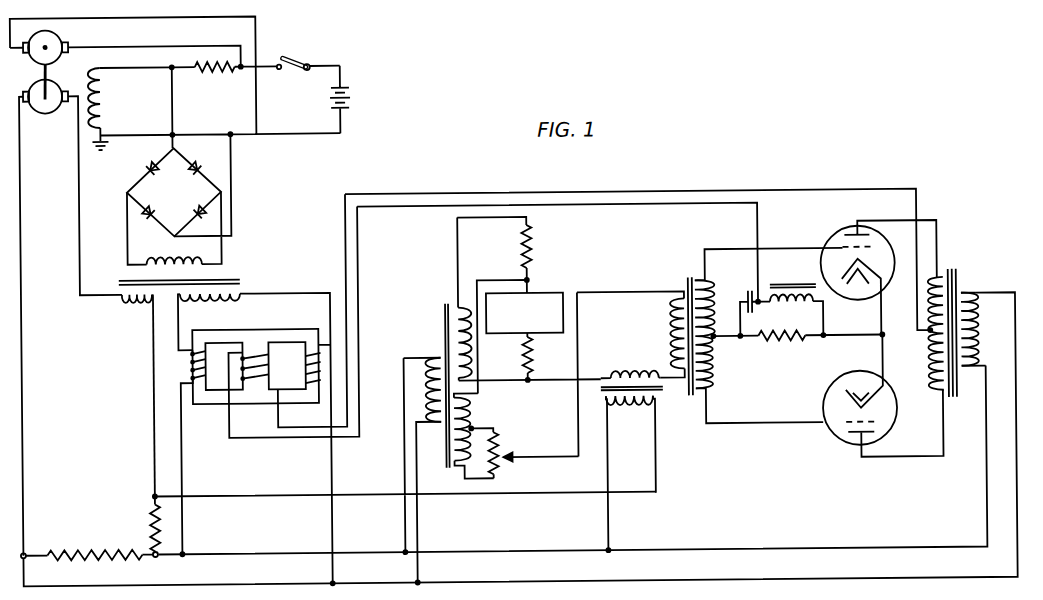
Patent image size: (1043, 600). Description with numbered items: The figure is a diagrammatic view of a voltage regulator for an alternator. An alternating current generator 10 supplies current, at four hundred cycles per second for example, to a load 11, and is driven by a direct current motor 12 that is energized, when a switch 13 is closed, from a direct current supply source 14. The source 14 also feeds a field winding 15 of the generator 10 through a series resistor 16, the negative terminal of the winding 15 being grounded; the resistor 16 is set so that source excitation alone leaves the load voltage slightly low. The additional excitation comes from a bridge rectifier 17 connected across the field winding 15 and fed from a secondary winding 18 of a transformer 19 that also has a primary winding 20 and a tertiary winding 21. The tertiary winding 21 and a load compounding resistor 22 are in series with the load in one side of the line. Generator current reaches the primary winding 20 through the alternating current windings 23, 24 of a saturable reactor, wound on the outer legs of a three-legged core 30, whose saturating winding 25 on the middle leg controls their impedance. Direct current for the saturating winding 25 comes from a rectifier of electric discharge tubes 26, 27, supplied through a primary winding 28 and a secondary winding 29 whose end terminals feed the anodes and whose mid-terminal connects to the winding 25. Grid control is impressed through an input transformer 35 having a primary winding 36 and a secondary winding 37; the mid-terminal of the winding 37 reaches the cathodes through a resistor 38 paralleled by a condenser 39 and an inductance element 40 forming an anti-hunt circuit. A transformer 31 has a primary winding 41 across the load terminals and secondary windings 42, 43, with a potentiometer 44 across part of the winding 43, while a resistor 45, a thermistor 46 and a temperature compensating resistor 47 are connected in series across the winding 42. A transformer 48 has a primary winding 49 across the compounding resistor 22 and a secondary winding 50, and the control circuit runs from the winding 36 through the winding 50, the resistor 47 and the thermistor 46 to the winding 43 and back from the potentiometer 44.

The alternating current generator 10 is at (42, 109).
The load 11 is at (84, 546).
The direct current motor 12 is at (55, 46).
The switch 13 is at (304, 56).
The direct current supply source 14 is at (348, 105).
The field winding 15 is at (106, 107).
The series resistor 16 is at (214, 72).
The bridge rectifier 17 is at (174, 192).
The secondary winding 18 is at (166, 258).
The transformer 19 is at (242, 281).
The primary winding 20 is at (231, 298).
The tertiary winding 21 is at (134, 300).
The load compounding resistor 22 is at (148, 512).
The alternating current winding 23 is at (191, 370).
The alternating current winding 24 is at (322, 372).
The saturating winding 25 is at (256, 388).
The electric discharge tube 26 is at (885, 426).
The electric discharge tube 27 is at (878, 288).
The primary winding 28 is at (980, 338).
The secondary winding 29 is at (941, 283).
The three-legged core 30 is at (200, 401).
The transformer 31 is at (445, 305).
The input transformer 35 is at (690, 281).
The primary winding 36 is at (684, 318).
The secondary winding 37 is at (713, 381).
The resistor 38 is at (786, 343).
The condenser 39 is at (750, 293).
The inductance element 40 is at (801, 298).
The primary winding 41 is at (430, 358).
The secondary winding 42 is at (471, 352).
The secondary winding 43 is at (470, 413).
The potentiometer 44 is at (523, 451).
The resistor 45 is at (533, 250).
The thermistor 46 is at (548, 293).
The temperature compensating resistor 47 is at (534, 353).
The transformer 48 is at (660, 392).
The primary winding 49 is at (628, 406).
The secondary winding 50 is at (634, 377).